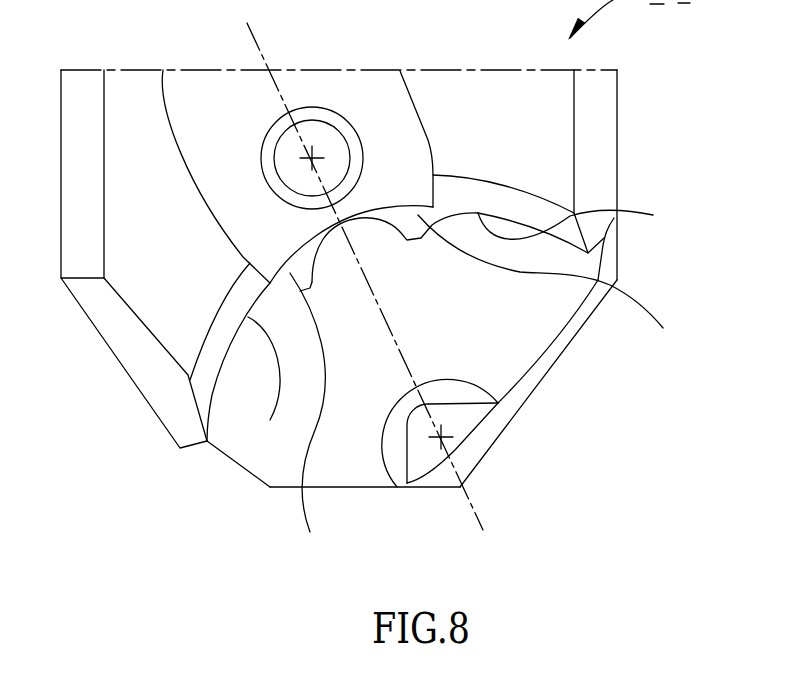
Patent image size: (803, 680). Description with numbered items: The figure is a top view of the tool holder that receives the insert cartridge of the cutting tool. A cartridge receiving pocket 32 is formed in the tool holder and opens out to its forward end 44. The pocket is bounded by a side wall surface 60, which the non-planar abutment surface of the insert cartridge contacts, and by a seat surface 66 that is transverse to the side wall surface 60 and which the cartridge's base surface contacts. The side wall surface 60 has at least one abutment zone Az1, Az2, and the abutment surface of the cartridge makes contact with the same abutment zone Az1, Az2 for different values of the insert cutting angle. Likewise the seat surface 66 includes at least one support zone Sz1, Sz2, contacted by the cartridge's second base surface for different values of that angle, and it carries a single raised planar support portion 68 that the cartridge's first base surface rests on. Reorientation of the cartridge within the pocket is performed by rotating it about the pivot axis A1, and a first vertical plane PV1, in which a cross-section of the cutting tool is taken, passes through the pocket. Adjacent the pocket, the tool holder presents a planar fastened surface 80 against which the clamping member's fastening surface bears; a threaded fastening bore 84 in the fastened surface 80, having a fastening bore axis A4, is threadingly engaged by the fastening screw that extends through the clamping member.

The fastened surface 80 is at (211, 162).
The threaded fastening bore 84 is at (283, 155).
The first vertical plane PV1 is at (378, 285).
The fastening bore axis A4 is at (318, 147).
The abutment zone Az2 is at (590, 222).
The support zone Sz2 is at (565, 283).
The cartridge receiving pocket 32 is at (520, 297).
The forward end 44 is at (515, 400).
The seat surface 66 is at (505, 320).
The pivot axis A1 is at (447, 430).
The raised planar support portion 68 is at (398, 440).
The support zone Sz1 is at (316, 422).
The abutment zone Az1 is at (214, 386).
The side wall surface 60 is at (270, 420).